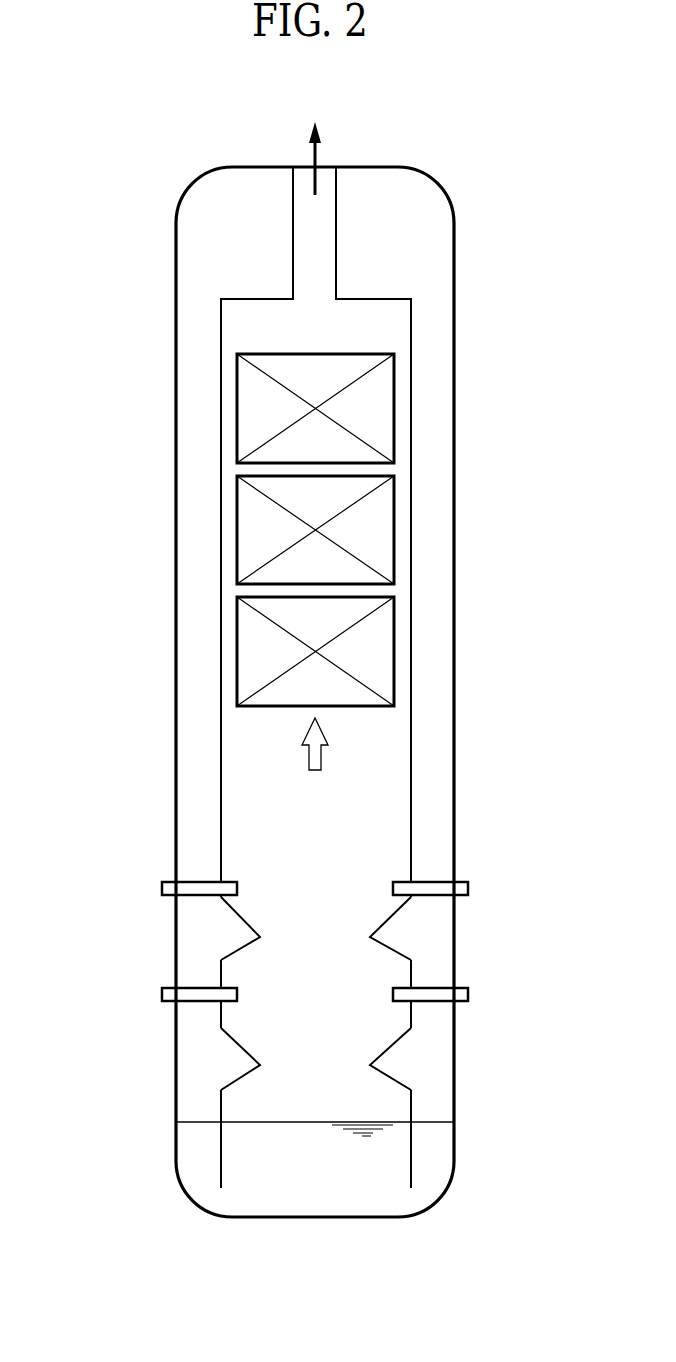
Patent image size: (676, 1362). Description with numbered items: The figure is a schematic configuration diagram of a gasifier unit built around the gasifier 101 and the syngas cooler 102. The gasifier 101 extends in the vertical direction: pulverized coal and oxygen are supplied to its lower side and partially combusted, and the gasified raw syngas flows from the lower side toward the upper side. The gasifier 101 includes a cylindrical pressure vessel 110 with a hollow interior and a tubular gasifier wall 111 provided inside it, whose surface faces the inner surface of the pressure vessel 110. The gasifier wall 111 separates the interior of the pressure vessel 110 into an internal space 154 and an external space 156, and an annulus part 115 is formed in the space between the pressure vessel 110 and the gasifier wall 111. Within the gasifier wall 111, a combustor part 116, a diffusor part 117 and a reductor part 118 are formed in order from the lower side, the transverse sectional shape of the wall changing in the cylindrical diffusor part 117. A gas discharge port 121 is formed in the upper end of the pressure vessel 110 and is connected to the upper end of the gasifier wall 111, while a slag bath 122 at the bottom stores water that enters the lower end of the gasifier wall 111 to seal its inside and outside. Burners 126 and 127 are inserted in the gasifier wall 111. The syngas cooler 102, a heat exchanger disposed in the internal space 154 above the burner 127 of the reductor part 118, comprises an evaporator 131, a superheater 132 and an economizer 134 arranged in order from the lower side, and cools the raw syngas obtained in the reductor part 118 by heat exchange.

The gasifier 101 is at (118, 150).
The syngas cooler 102 is at (107, 378).
The pressure vessel 110 is at (455, 705).
The gasifier wall 111 is at (411, 771).
The annulus part 115 is at (432, 624).
The combustor part 116 is at (298, 1028).
The diffusor part 117 is at (298, 953).
The reductor part 118 is at (300, 832).
The gas discharge port 121 is at (323, 166).
The slag bath 122 is at (433, 1180).
The burner 126 is at (462, 993).
The burner 127 is at (462, 886).
The evaporator 131 is at (237, 651).
The superheater 132 is at (237, 530).
The economizer 134 is at (237, 406).
The internal space 154 is at (221, 717).
The external space 156 is at (193, 773).